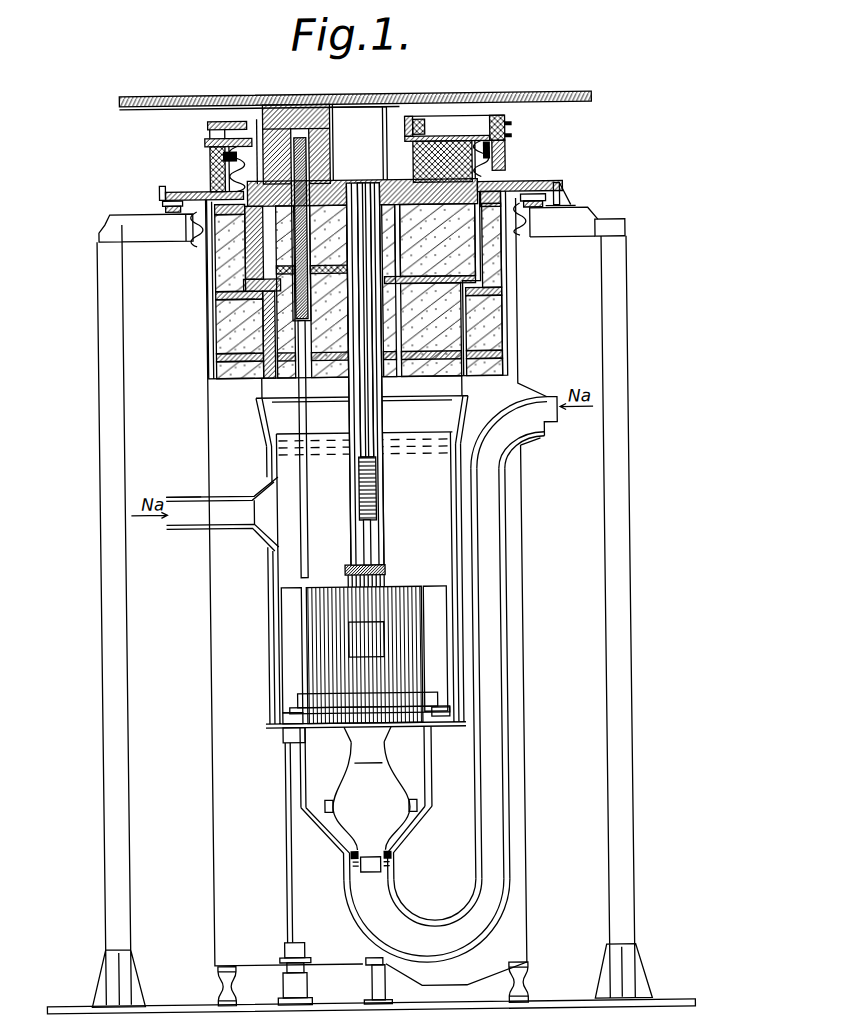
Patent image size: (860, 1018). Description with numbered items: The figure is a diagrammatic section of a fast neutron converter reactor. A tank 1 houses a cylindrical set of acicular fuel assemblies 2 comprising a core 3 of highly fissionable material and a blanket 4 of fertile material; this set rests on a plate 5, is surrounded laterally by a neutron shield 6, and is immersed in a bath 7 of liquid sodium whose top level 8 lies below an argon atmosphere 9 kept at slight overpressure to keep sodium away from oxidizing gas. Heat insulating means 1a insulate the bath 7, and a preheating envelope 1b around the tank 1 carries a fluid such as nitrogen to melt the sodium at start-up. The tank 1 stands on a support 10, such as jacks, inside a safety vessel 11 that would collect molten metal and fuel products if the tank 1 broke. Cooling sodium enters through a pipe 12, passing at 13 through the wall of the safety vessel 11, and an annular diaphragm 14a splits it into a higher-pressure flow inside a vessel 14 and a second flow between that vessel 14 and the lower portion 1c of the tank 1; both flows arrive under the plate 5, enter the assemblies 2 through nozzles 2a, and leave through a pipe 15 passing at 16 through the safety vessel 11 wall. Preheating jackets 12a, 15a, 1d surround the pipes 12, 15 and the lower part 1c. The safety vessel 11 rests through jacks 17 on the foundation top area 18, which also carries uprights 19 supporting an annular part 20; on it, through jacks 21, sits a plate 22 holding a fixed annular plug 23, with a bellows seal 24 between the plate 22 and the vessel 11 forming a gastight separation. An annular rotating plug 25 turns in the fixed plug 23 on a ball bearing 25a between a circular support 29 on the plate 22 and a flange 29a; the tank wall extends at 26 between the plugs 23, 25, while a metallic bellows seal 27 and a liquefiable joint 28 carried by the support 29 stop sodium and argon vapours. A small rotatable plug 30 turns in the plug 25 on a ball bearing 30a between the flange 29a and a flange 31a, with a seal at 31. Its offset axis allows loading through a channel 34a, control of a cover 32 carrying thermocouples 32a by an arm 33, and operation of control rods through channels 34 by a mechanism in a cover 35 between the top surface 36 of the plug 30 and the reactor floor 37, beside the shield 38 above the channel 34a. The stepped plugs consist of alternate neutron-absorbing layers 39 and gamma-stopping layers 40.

The tank 1 is at (367, 639).
The heat insulating means 1a is at (453, 470).
The preheating envelope 1b is at (457, 540).
The lower portion of tank 1c is at (428, 780).
The preheating jacket 1d is at (410, 838).
The fuel assemblies 2 is at (316, 640).
The nozzles 2a is at (338, 730).
The core 3 is at (383, 636).
The blanket 4 is at (338, 590).
The plate 5 is at (281, 723).
The neutron shield 6 is at (437, 609).
The bath of liquid sodium 7 is at (415, 525).
The top level of sodium 8 is at (426, 438).
The atmosphere of argon 9 is at (336, 431).
The support 10 is at (282, 830).
The safety vessel 11 is at (521, 702).
The pipe 12 is at (461, 679).
The preheating jacket 12a is at (507, 552).
The passage of pipe through vessel wall 13 is at (550, 399).
The vessel 14 is at (388, 778).
The annular diaphragm 14a is at (385, 866).
The pipe 15 is at (238, 488).
The preheating jacket 15a is at (185, 490).
The passage of pipe through vessel wall 16 is at (205, 528).
The jacks 17 is at (211, 984).
The top area of foundation 18 is at (570, 999).
The uprights 19 is at (126, 664).
The annular part 20 is at (583, 213).
The jacks 21 is at (172, 210).
The plate 22 is at (178, 190).
The fixed annular plug 23 is at (240, 272).
The bellows seal 24 is at (200, 238).
The annular rotating plug 25 is at (465, 345).
The ball bearing 25a is at (515, 128).
The extension of tank wall 26 is at (240, 304).
The metallic bellows seal 27 is at (231, 152).
The liquefiable joint 28 is at (212, 130).
The circular support 29 is at (215, 172).
The flange 29a is at (432, 134).
The small rotatable plug 30 is at (335, 350).
The ball bearing 30a is at (419, 120).
The seal 31 is at (420, 168).
The flange 31a is at (407, 118).
The cover 32 is at (383, 568).
The thermocouples 32a is at (383, 580).
The arm 33 is at (367, 379).
The channels 34 is at (348, 183).
The channel 34a is at (362, 415).
The cover 35 is at (372, 140).
The top surface of rotating plug 36 is at (276, 106).
The floor of nuclear reactor 37 is at (312, 104).
The shield 38 is at (335, 135).
The layers of neutron absorbing substance 39 is at (493, 162).
The layers of gamma-stopping substance 40 is at (515, 192).